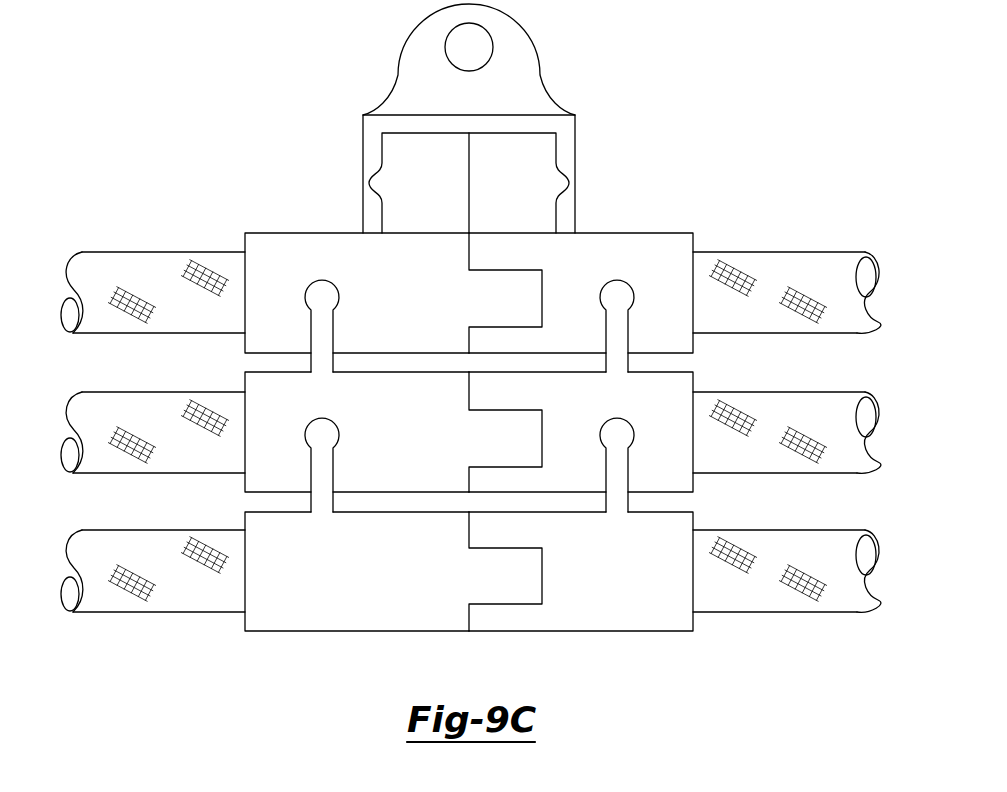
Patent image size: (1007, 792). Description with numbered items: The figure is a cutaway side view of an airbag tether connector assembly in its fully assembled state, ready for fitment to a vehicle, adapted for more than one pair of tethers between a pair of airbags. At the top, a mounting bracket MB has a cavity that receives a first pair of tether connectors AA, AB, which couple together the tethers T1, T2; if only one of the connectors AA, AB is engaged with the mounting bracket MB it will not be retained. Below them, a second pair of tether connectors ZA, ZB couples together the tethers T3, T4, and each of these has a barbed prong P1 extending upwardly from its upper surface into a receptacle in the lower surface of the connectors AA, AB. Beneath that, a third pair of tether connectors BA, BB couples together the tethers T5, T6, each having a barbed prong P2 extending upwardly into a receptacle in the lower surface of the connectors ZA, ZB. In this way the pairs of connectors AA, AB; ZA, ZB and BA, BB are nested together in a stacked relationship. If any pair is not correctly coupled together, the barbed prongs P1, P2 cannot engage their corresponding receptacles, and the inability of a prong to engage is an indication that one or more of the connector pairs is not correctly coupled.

The mounting bracket MB is at (397, 82).
The first tether connector AA is at (397, 311).
The first tether connector AB is at (673, 311).
The second tether connector ZA is at (397, 449).
The second tether connector ZB is at (673, 449).
The third tether connector BA is at (397, 589).
The third tether connector BB is at (673, 589).
The barbed prong P1 is at (321, 298).
The barbed prong P2 is at (321, 437).
The tether T1 is at (165, 252).
The tether T2 is at (780, 252).
The tether T3 is at (108, 392).
The tether T4 is at (830, 392).
The tether T5 is at (157, 612).
The tether T6 is at (773, 612).